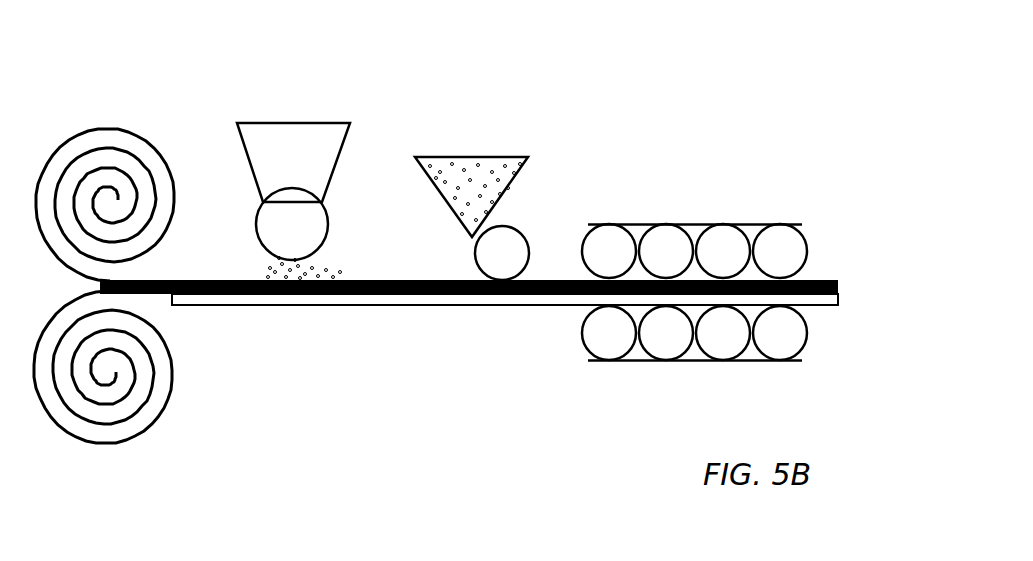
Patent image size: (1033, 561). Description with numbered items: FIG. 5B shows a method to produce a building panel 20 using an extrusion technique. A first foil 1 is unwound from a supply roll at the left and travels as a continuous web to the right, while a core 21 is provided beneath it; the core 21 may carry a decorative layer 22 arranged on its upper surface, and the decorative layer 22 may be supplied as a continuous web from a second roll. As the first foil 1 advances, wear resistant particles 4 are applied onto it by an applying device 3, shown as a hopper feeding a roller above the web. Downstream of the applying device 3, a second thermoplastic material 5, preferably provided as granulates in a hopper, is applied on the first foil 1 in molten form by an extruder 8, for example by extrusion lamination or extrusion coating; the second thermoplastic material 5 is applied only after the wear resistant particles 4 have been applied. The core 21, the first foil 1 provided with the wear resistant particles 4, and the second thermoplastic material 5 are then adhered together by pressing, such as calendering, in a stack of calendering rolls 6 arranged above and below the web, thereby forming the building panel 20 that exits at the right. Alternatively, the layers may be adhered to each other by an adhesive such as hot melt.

The first foil 1 is at (227, 282).
The applying device 3 is at (238, 108).
The wear resistant particles 4 is at (310, 270).
The second thermoplastic material 5 is at (478, 172).
The calendering rolls 6 is at (708, 221).
The extruder 8 is at (532, 185).
The building panel 20 is at (826, 271).
The core 21 is at (508, 301).
The decorative layer 22 is at (137, 294).